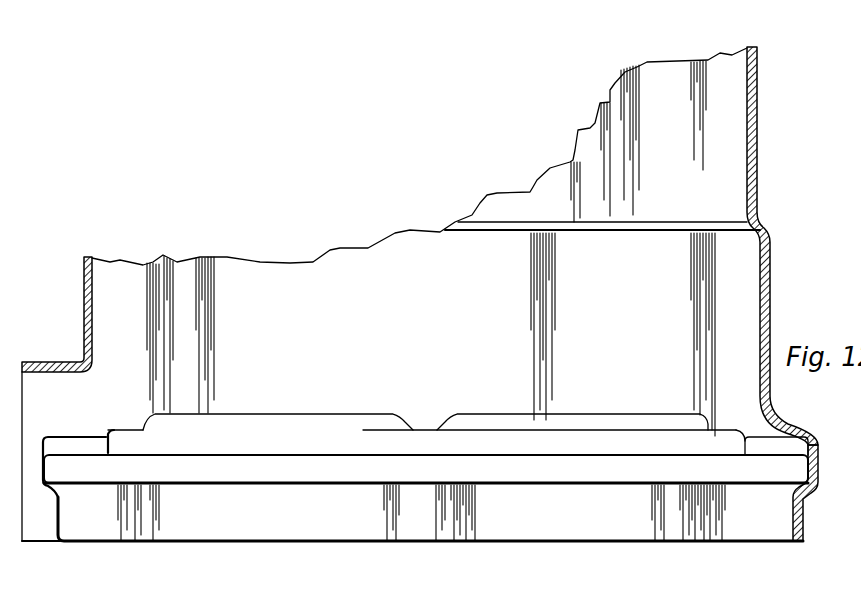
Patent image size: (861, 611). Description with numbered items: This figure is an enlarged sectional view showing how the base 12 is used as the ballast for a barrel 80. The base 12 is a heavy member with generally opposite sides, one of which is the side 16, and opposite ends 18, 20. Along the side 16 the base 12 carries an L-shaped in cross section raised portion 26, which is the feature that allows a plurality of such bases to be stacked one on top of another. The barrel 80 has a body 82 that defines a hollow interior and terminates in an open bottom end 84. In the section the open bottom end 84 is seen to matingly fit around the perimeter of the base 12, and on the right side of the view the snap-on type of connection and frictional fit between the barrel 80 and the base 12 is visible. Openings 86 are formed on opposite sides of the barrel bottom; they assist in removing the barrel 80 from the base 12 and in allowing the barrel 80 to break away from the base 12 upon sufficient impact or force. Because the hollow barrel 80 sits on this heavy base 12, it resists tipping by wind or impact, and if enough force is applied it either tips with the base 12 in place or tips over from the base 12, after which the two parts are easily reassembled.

The base 12 is at (260, 502).
The side 16 is at (184, 518).
The end 18 is at (56, 514).
The end 20 is at (803, 516).
The raised portion 26 is at (662, 440).
The barrel 80 is at (759, 47).
The body 82 is at (727, 78).
The open bottom end 84 is at (22, 542).
The opening 86 is at (27, 395).